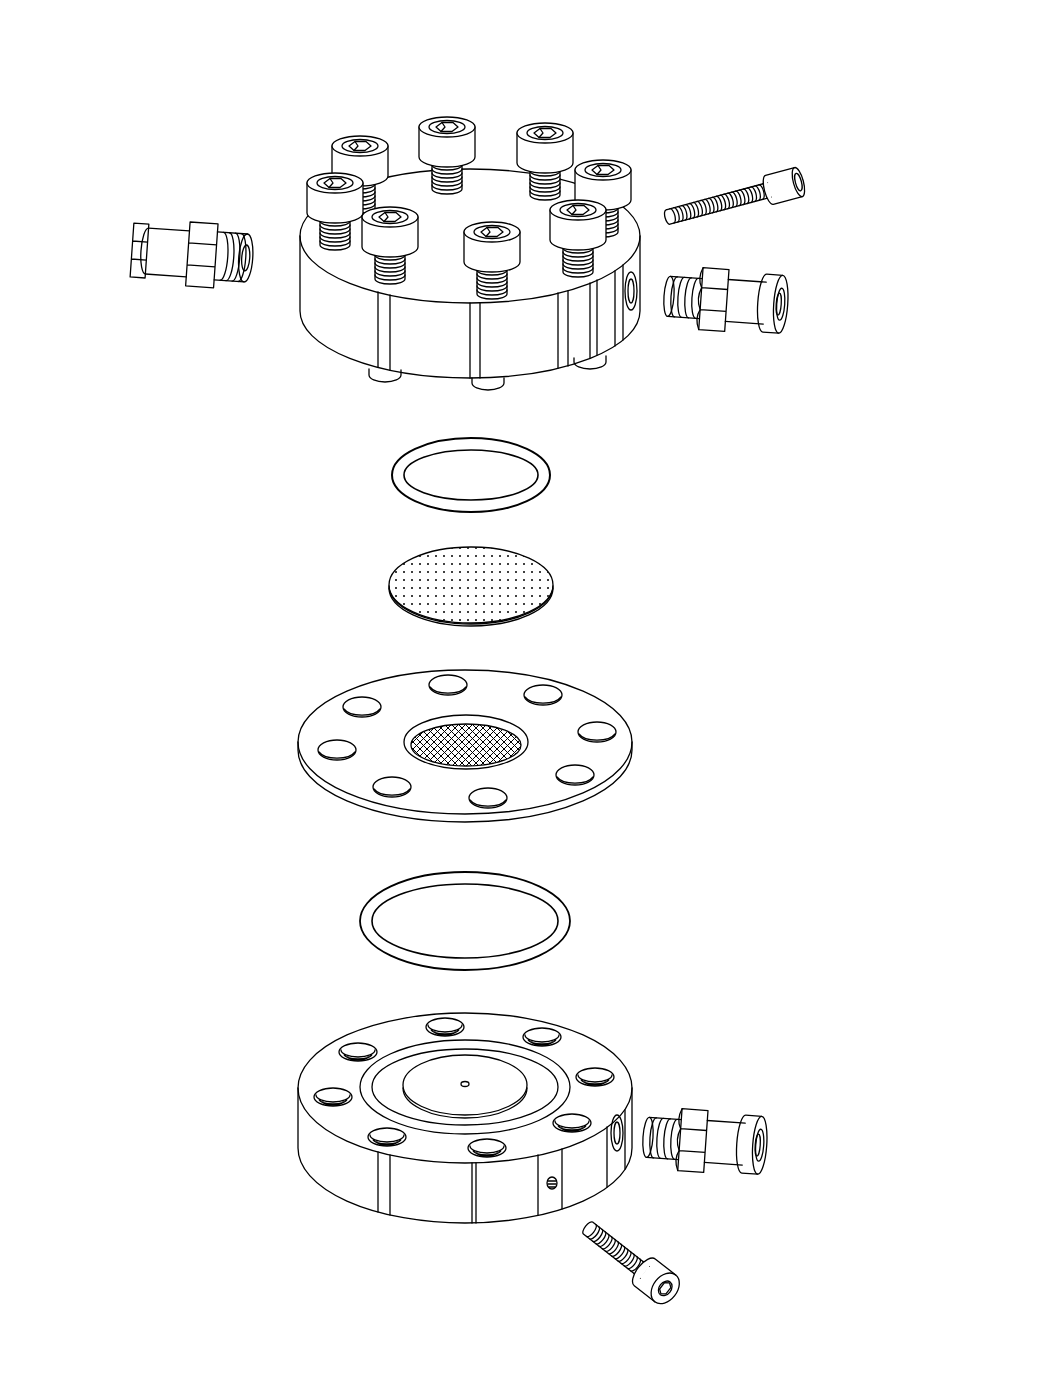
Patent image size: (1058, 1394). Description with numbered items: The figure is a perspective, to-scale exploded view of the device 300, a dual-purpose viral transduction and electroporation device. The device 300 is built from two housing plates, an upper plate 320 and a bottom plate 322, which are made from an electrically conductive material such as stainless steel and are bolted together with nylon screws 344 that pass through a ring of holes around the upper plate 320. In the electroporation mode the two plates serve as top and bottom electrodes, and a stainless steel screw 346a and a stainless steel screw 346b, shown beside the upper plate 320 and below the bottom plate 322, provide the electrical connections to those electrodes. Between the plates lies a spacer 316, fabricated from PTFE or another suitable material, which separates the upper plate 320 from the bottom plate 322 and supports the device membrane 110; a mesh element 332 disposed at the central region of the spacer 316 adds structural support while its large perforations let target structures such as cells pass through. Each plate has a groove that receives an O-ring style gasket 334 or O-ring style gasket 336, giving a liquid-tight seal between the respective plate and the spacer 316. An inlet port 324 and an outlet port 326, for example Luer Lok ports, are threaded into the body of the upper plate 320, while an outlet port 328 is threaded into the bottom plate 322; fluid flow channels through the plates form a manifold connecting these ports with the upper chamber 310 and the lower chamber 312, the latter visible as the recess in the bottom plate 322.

The device 300 is at (775, 63).
The upper chamber 310 is at (342, 374).
The upper plate 320 is at (507, 193).
The nylon screws 344 is at (548, 122).
The screw 346a is at (812, 183).
The inlet port 324 is at (132, 246).
The outlet port 326 is at (790, 302).
The O-ring style gasket 334 is at (551, 478).
The device membrane 110 is at (554, 587).
The spacer 316 is at (328, 722).
The mesh element 332 is at (530, 742).
The O-ring style gasket 336 is at (568, 921).
The bottom plate 322 is at (298, 1126).
The lower chamber 312 is at (430, 1087).
The outlet port 328 is at (765, 1142).
The screw 346b is at (690, 1293).